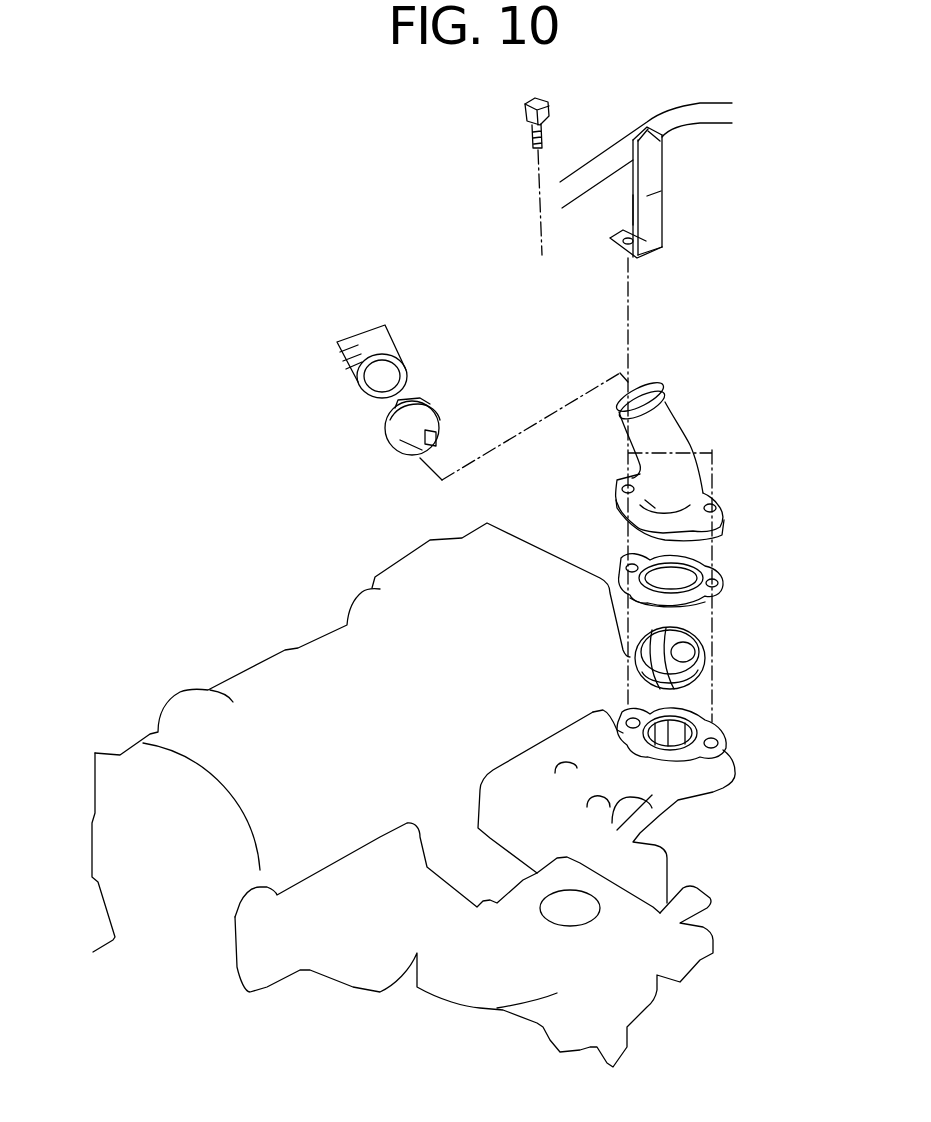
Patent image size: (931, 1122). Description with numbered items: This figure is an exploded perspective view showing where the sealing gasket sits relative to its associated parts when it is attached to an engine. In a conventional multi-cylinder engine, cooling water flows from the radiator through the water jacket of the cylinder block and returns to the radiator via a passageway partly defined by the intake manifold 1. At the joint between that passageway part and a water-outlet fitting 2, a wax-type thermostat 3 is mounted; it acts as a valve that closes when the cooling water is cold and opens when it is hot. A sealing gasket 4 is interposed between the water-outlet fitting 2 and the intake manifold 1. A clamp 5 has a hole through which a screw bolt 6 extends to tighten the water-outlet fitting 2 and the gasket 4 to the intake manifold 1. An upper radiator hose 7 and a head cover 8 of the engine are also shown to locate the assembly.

The intake manifold 1 is at (727, 787).
The water-outlet fitting 2 is at (677, 470).
The wax-type thermostat 3 is at (703, 650).
The sealing gasket 4 is at (715, 569).
The clamp 5 is at (657, 194).
The screw bolt 6 is at (549, 106).
The upper radiator hose 7 is at (347, 353).
The head cover 8 is at (252, 668).